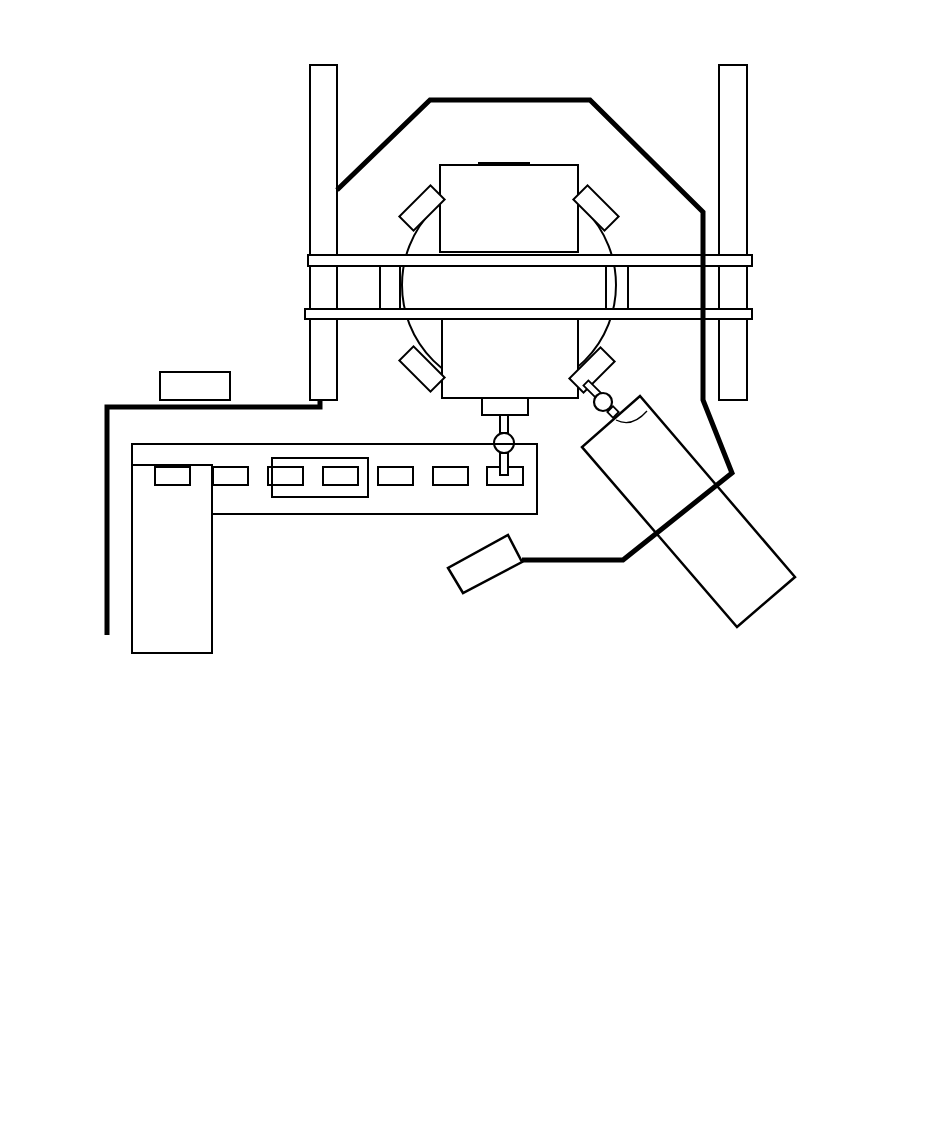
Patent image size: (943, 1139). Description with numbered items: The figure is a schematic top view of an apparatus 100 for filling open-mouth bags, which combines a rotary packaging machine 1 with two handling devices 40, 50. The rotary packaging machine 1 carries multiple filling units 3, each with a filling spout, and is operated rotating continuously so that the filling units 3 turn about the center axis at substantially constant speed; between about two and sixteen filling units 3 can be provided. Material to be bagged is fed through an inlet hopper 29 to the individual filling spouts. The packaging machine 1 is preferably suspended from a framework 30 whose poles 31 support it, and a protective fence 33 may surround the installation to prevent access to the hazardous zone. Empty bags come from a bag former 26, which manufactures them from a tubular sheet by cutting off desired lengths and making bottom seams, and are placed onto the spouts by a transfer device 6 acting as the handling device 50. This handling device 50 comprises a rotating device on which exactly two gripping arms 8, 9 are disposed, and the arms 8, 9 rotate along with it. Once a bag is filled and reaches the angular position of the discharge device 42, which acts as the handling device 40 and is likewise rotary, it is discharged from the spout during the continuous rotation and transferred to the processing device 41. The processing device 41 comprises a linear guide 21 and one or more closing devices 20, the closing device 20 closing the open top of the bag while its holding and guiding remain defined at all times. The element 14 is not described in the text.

The apparatus 100 is at (203, 73).
The rotary packaging machine 1 is at (148, 110).
The filling unit 3 is at (413, 190).
The inlet hopper 29 is at (550, 186).
The framework 30 is at (752, 108).
The poles 31 is at (746, 252).
The protective fence 33 is at (737, 453).
The handling device 50 is at (608, 388).
The transfer device 6 is at (612, 392).
The gripping arm 9 is at (653, 406).
The gripping arm 8 is at (590, 398).
The handling device 40 is at (490, 450).
The discharge device 42 is at (523, 452).
The arm 14 is at (633, 483).
The bag former 26 is at (752, 557).
The closing device 20 is at (302, 497).
The linear guide 21 is at (397, 514).
The processing device 41 is at (340, 532).